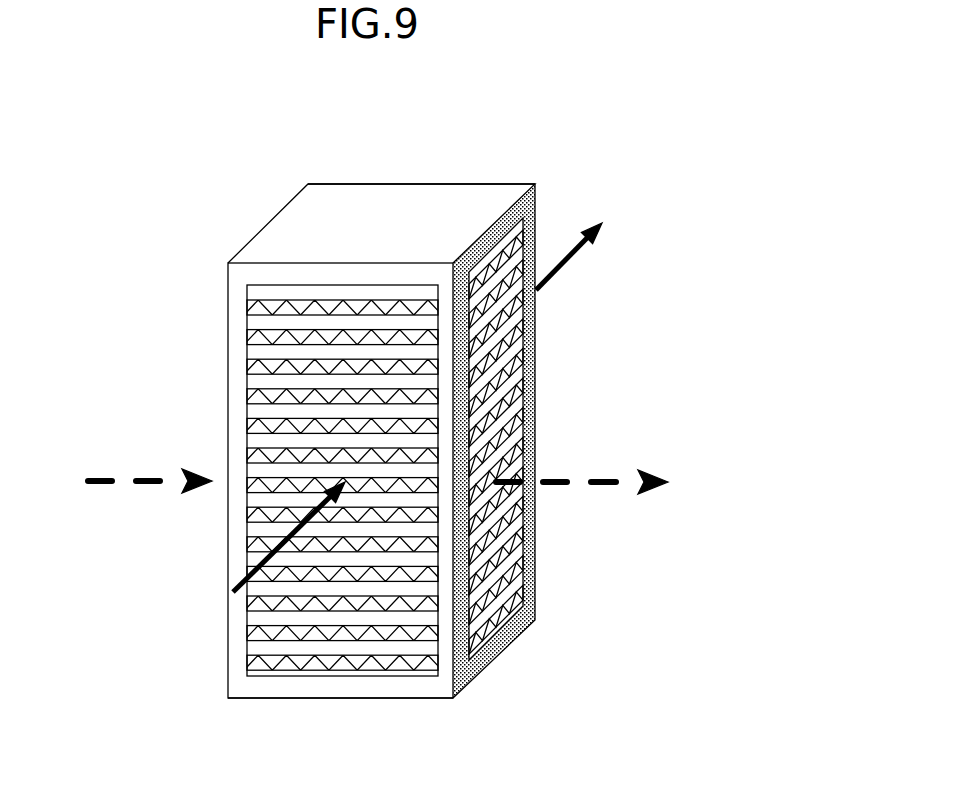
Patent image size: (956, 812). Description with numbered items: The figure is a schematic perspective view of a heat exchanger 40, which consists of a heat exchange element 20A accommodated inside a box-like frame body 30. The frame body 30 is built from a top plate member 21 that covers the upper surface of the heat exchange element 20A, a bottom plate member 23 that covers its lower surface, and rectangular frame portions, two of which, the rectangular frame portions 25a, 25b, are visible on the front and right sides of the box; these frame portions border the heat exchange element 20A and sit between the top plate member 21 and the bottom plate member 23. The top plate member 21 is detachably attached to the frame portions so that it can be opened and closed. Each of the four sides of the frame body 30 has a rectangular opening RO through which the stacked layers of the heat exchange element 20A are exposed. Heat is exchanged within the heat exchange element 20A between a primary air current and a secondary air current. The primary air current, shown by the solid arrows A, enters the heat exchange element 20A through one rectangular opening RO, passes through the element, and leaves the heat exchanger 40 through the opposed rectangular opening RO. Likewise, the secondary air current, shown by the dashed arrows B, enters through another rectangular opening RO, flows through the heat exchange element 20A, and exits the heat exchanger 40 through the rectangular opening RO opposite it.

The heat exchanger 40 is at (378, 426).
The frame body 30 is at (273, 243).
The top plate member 21 is at (398, 197).
The bottom plate member 23 is at (338, 688).
The rectangular frame portion 25a is at (236, 335).
The rectangular frame portion 25b is at (537, 205).
The heat exchange element 20A is at (262, 381).
The rectangular opening RO is at (513, 352).
The solid arrows A is at (231, 588).
The arrows B is at (98, 488).